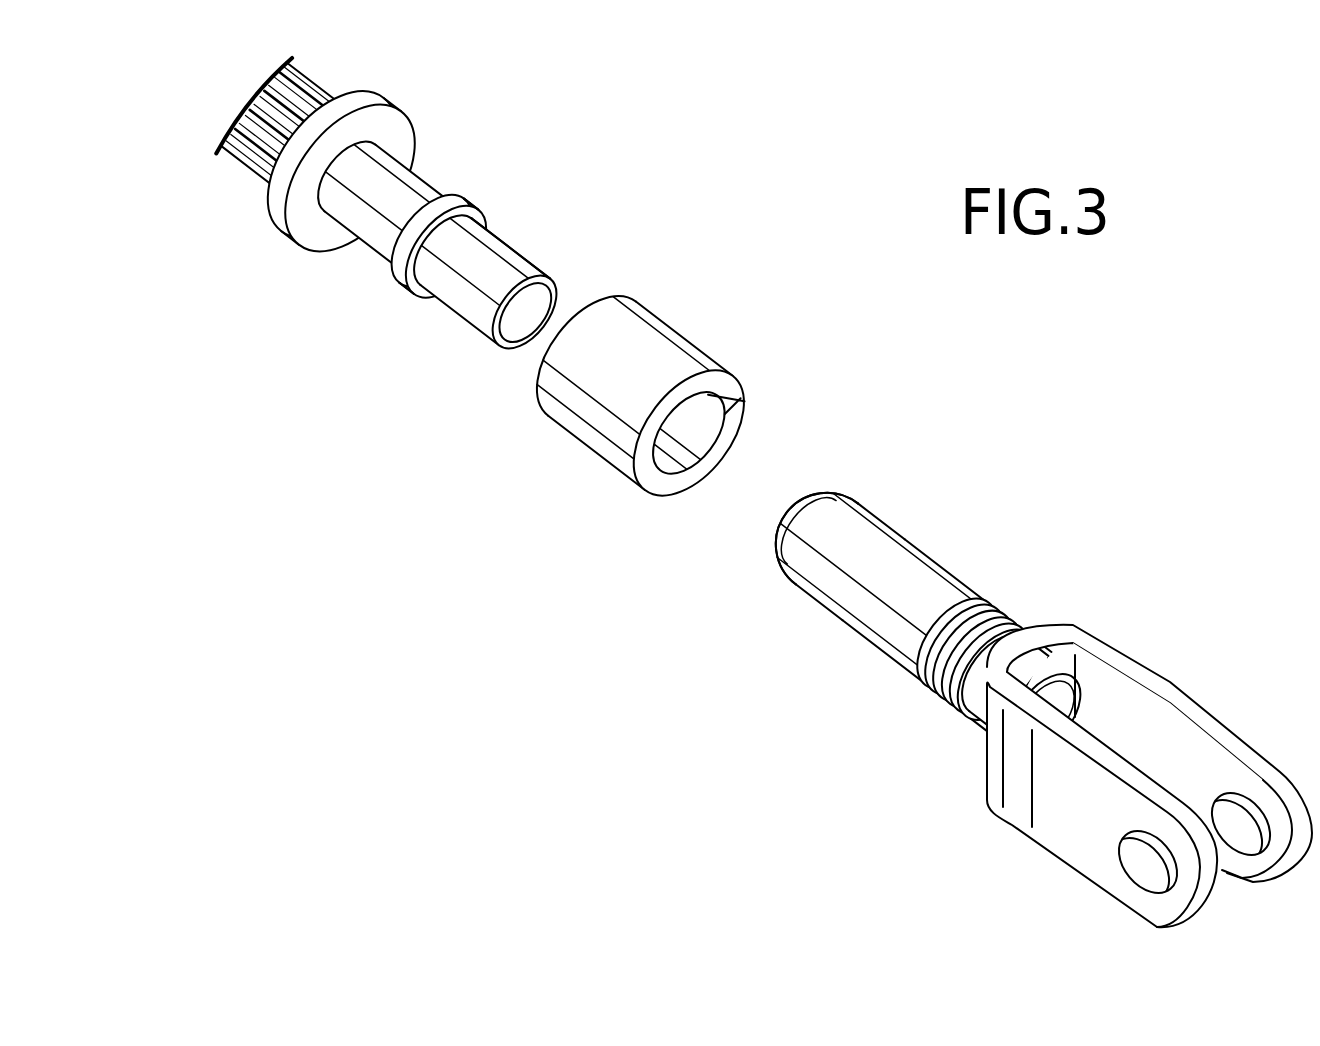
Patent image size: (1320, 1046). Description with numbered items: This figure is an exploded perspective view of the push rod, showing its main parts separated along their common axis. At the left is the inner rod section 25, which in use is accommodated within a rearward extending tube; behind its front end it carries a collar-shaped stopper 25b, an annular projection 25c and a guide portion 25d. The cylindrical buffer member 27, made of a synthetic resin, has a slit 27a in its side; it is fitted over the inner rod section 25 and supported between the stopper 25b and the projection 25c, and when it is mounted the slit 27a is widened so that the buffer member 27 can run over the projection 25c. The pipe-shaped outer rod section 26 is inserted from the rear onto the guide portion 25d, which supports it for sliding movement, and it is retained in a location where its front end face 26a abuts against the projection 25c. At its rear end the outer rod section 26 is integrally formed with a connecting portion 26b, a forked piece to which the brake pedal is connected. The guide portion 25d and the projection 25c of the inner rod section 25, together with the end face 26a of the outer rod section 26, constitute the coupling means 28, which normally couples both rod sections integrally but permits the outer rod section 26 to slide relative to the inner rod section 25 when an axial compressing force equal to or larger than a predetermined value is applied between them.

The inner rod section 25 is at (396, 419).
The collar-shaped stopper 25b is at (290, 212).
The annular projection 25c is at (402, 283).
The guide portion 25d is at (468, 297).
The outer rod section 26 is at (920, 664).
The front end face 26a is at (795, 588).
The connecting portion 26b is at (1165, 695).
The buffer member 27 is at (668, 320).
The slit 27a is at (737, 400).
The coupling means 28 is at (651, 694).